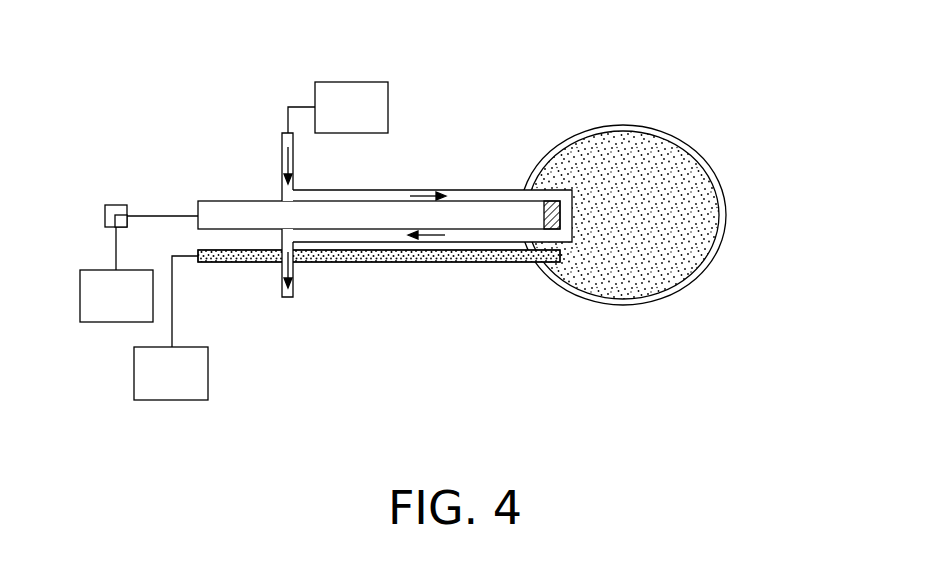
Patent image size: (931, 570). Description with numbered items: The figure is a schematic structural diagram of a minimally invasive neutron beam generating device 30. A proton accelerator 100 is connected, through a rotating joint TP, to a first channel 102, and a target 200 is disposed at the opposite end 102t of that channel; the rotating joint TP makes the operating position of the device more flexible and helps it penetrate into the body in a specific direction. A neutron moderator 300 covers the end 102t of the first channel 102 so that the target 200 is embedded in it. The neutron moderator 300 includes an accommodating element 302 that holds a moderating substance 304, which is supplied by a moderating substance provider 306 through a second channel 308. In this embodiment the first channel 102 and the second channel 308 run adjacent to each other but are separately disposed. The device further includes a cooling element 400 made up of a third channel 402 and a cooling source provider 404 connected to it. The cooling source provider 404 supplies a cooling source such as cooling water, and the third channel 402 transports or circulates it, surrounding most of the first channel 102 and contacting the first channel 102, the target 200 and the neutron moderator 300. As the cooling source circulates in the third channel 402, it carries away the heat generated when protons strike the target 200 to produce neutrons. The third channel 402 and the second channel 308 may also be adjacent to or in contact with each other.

The minimally invasive neutron beam generating device 30 is at (20, 38).
The proton accelerator 100 is at (93, 311).
The first channel 102 is at (477, 210).
The end of the first channel 102t is at (533, 212).
The target 200 is at (533, 189).
The neutron moderator 300 is at (686, 214).
The accommodating element 302 is at (703, 167).
The moderating substance 304 is at (799, 128).
The moderating substance provider 306 is at (148, 388).
The second channel 308 is at (418, 264).
The cooling element 400 is at (253, 205).
The third channel 402 is at (348, 232).
The cooling source provider 404 is at (375, 120).
The rotating joint TP is at (112, 206).